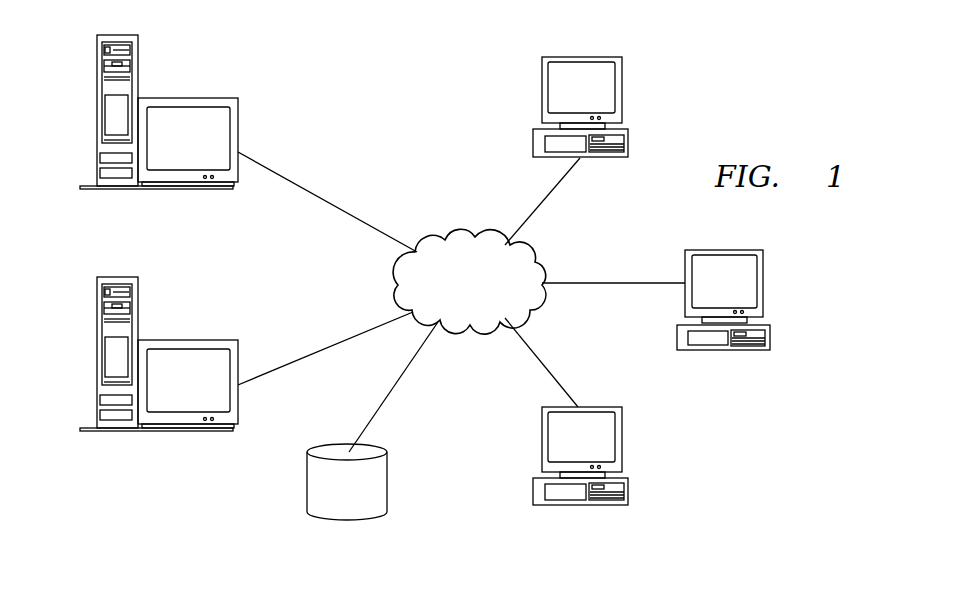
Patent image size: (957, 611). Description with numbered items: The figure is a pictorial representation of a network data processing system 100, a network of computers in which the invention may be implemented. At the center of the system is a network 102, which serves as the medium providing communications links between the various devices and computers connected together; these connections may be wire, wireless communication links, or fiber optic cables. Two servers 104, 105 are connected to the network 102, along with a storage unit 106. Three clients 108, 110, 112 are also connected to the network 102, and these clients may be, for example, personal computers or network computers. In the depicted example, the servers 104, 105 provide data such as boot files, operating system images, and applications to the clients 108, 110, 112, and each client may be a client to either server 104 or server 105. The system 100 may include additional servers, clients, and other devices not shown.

The network data processing system 100 is at (328, 62).
The network 102 is at (452, 240).
The server 104 is at (187, 340).
The server 105 is at (187, 98).
The storage unit 106 is at (307, 480).
The client 108 is at (623, 91).
The client 110 is at (765, 287).
The client 112 is at (623, 441).